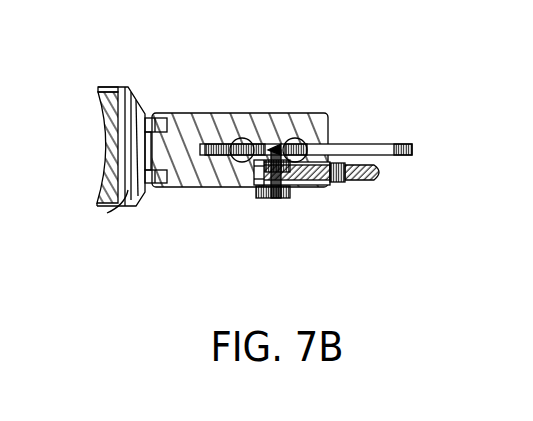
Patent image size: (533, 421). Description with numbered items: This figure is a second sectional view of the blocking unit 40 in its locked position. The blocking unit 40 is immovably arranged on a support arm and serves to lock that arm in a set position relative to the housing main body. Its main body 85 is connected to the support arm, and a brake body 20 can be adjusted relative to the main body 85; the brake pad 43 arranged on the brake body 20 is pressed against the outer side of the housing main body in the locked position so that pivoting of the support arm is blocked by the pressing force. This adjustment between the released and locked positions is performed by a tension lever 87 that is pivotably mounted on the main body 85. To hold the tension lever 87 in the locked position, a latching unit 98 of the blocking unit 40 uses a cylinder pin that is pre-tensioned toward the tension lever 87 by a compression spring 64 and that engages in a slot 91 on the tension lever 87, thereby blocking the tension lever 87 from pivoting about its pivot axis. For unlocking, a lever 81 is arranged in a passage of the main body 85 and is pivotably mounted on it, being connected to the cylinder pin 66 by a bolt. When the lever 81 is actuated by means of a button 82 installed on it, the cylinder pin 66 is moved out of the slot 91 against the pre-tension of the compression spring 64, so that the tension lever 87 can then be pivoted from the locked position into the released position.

The brake body 20 is at (128, 190).
The blocking unit 40 is at (127, 285).
The brake pad 43 is at (100, 107).
The compression spring 64 is at (270, 188).
The cylinder pin 66 is at (273, 162).
The lever 81 is at (313, 173).
The button 82 is at (382, 177).
The main body 85 is at (188, 117).
The tension lever 87 is at (372, 147).
The slot 91 is at (276, 145).
The latching unit 98 is at (310, 218).